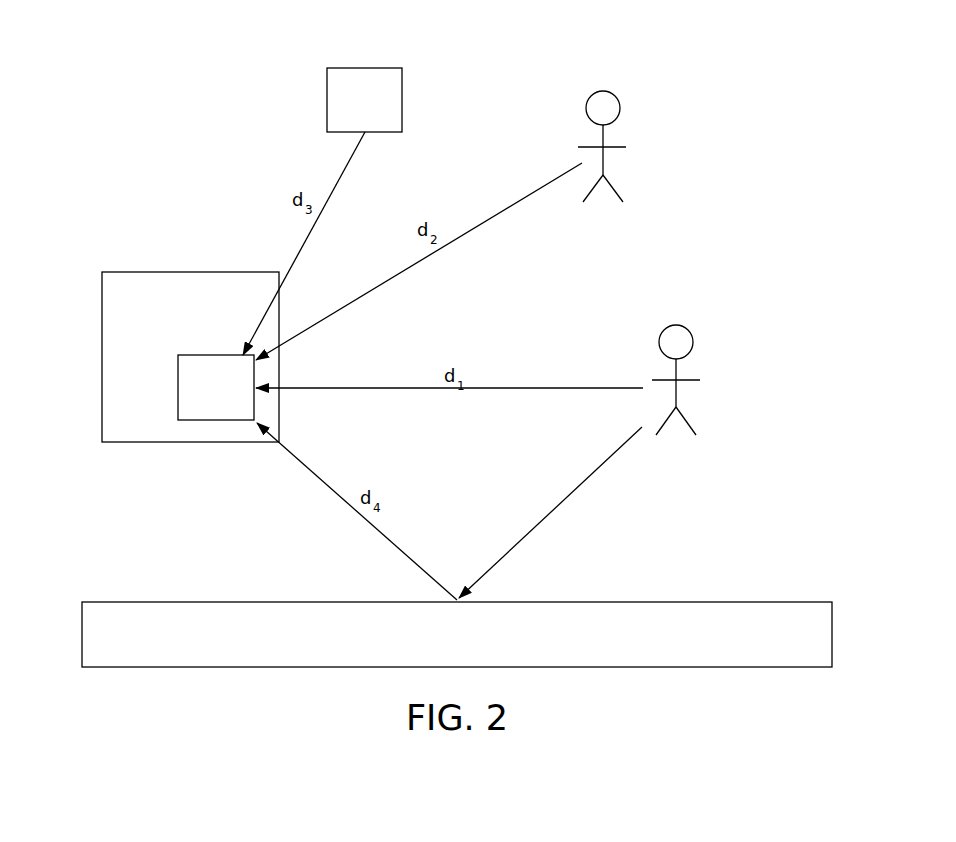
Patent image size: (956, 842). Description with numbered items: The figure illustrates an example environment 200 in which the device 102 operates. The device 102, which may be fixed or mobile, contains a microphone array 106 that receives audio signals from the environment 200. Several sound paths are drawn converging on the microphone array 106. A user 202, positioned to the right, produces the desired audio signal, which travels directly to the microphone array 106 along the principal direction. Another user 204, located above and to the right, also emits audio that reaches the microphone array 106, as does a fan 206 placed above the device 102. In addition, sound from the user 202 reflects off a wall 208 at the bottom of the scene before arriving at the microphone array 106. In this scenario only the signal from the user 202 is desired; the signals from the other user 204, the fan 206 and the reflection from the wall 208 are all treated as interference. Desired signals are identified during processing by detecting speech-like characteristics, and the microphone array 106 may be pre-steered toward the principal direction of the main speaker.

The environment 200 is at (95, 166).
The device 102 is at (102, 357).
The microphone array 106 is at (200, 420).
The fan 206 is at (327, 100).
The another user 204 is at (602, 91).
The user 202 is at (676, 325).
The wall 208 is at (674, 602).